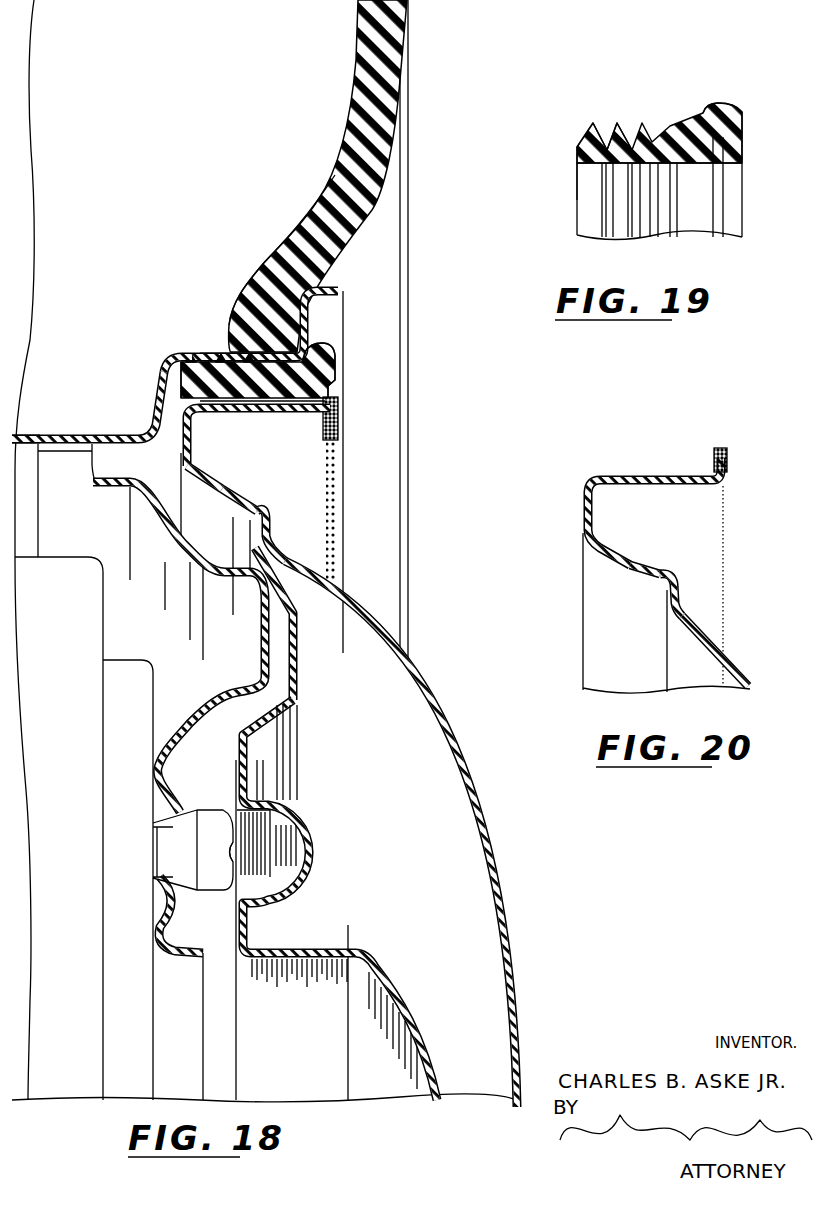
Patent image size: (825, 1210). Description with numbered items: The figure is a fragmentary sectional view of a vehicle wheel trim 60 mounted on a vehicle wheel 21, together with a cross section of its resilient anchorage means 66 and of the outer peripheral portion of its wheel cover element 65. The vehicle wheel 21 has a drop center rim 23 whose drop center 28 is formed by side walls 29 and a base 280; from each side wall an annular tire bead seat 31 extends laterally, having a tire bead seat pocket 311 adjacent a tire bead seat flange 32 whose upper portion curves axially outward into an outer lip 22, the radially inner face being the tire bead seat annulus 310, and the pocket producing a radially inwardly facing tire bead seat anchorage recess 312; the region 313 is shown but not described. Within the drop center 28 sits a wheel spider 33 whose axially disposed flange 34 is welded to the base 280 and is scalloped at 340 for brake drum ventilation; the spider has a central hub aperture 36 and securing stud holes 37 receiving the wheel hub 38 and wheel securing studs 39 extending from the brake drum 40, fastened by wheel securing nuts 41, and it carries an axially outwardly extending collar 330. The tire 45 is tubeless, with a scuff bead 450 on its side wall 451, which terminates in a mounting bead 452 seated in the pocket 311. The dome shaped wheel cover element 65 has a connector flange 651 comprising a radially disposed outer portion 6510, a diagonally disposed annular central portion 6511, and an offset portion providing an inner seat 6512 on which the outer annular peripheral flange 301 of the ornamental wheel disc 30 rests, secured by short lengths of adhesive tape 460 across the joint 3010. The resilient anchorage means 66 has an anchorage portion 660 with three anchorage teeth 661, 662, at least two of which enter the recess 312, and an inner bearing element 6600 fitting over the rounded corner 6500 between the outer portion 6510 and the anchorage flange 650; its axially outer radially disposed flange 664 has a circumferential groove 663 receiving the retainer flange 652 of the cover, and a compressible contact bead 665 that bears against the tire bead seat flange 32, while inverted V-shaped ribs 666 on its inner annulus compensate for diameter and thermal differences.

In FIG. 18, the tire 45 is at (366, 50).
In FIG. 18, the scuff bead 450 is at (410, 24).
In FIG. 18, the tire side wall 451 is at (352, 142).
In FIG. 18, the mounting bead 452 is at (264, 282).
In FIG. 18, the outer lip 22 is at (340, 287).
In FIG. 18, the tire bead seat flange 32 is at (345, 305).
In FIG. 18, the tire bead seat 31 is at (262, 356).
In FIG. 18, the tire bead seat pocket 311 is at (248, 352).
In FIG. 18, the tire bead seat anchorage recess 312 is at (233, 360).
In FIG. 18, the flap portion 313 is at (266, 350).
In FIG. 18, the resilient anchorage means 66 is at (195, 388).
In FIG. 19, the resilient anchorage means 66 is at (573, 147).
In FIG. 18, the anchorage tooth 661 is at (212, 355).
In FIG. 19, the anchorage tooth 661 is at (590, 124).
In FIG. 19, the anchorage tooth 662 is at (618, 122).
In FIG. 18, the circumferential groove 663 is at (335, 366).
In FIG. 19, the circumferential groove 663 is at (735, 114).
In FIG. 18, the axially outer radially disposed flange 664 is at (334, 374).
In FIG. 19, the axially outer radially disposed flange 664 is at (744, 134).
In FIG. 18, the contact bead 665 is at (333, 346).
In FIG. 19, the contact bead 665 is at (699, 108).
In FIG. 19, the inverted V-shaped ribs 666 is at (629, 228).
In FIG. 19, the anchorage portion 660 is at (605, 180).
In FIG. 18, the bearing element 6600 is at (183, 410).
In FIG. 19, the bearing element 6600 is at (578, 166).
In FIG. 18, the side walls 29 is at (165, 398).
In FIG. 18, the drop center rim 23 is at (69, 433).
In FIG. 18, the drop center 28 is at (42, 435).
In FIG. 18, the axially disposed flange 34 is at (36, 453).
In FIG. 18, the base 280 is at (70, 452).
In FIG. 18, the scalloped formation 340 is at (97, 488).
In FIG. 18, the outer annular peripheral flange 301 is at (193, 548).
In FIG. 18, the wheel spider 33 is at (260, 632).
In FIG. 18, the collar 330 is at (292, 650).
In FIG. 18, the wheel disc 30 is at (297, 703).
In FIG. 18, the joint 3010 is at (258, 516).
In FIG. 18, the adhesive tape 460 is at (252, 523).
In FIG. 18, the tire bead seat annulus 310 is at (281, 402).
In FIG. 18, the anchorage flange 650 is at (306, 413).
In FIG. 20, the anchorage flange 650 is at (683, 474).
In FIG. 18, the rounded corner 6500 is at (193, 412).
In FIG. 20, the rounded corner 6500 is at (592, 486).
In FIG. 18, the radially disposed outer portion 6510 is at (191, 456).
In FIG. 20, the radially disposed outer portion 6510 is at (586, 518).
In FIG. 18, the connector flange 651 is at (196, 466).
In FIG. 20, the connector flange 651 is at (585, 543).
In FIG. 18, the diagonally disposed annular central portion 6511 is at (238, 492).
In FIG. 20, the diagonally disposed annular central portion 6511 is at (620, 570).
In FIG. 18, the inner seat 6512 is at (264, 527).
In FIG. 20, the inner seat 6512 is at (668, 598).
In FIG. 18, the retainer flange 652 is at (330, 384).
In FIG. 20, the retainer flange 652 is at (722, 447).
In FIG. 18, the wheel cover element 65 is at (519, 1016).
In FIG. 20, the wheel cover element 65 is at (738, 668).
In FIG. 18, the brake drum 40 is at (106, 660).
In FIG. 18, the vehicle wheel 21 is at (175, 723).
In FIG. 18, the wheel securing studs 39 is at (237, 800).
In FIG. 18, the securing stud holes 37 is at (154, 845).
In FIG. 18, the wheel securing nuts 41 is at (210, 878).
In FIG. 18, the central hub aperture 36 is at (172, 968).
In FIG. 18, the wheel hub 38 is at (188, 1060).
In FIG. 18, the vehicle wheel trim 60 is at (490, 906).